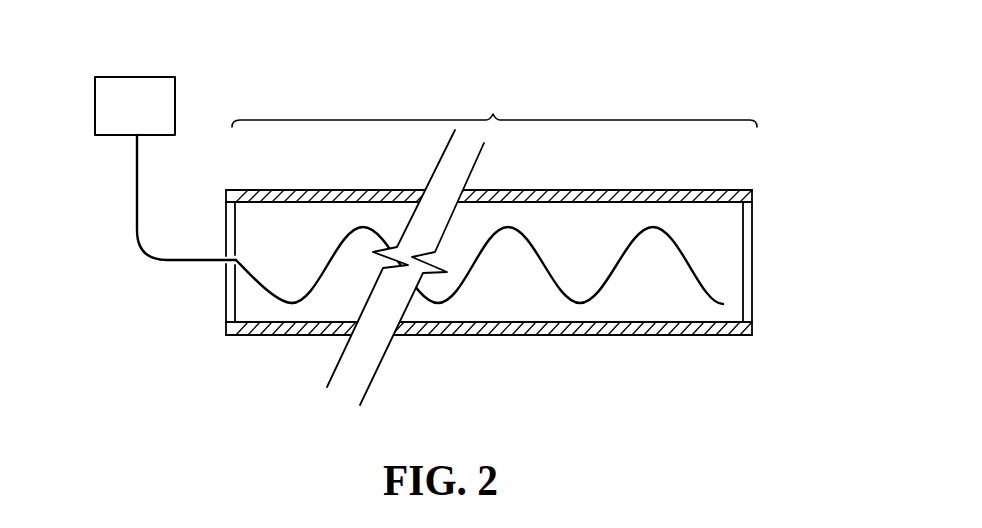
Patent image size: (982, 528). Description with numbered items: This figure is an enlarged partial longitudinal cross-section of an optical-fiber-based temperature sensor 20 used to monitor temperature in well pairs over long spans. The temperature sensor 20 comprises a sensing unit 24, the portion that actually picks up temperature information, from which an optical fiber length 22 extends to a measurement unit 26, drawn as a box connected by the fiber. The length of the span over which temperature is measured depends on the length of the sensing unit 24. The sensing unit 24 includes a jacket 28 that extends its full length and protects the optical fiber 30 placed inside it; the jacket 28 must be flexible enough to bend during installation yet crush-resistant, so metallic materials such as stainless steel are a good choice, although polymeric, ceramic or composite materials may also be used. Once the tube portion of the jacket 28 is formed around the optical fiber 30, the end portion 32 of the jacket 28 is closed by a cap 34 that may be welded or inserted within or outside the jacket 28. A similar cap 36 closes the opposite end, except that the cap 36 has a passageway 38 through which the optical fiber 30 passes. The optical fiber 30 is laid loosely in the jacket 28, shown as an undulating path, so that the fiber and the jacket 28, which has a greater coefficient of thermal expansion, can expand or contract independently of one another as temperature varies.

The temperature sensor 20 is at (623, 58).
The optical fiber length 22 is at (135, 212).
The sensing unit 24 is at (494, 104).
The measurement unit 26 is at (176, 90).
The jacket 28 is at (643, 190).
The optical fiber 30 is at (546, 257).
The end portion 32 is at (753, 322).
The cap 34 is at (754, 237).
The cap 36 is at (225, 291).
The passageway 38 is at (230, 257).